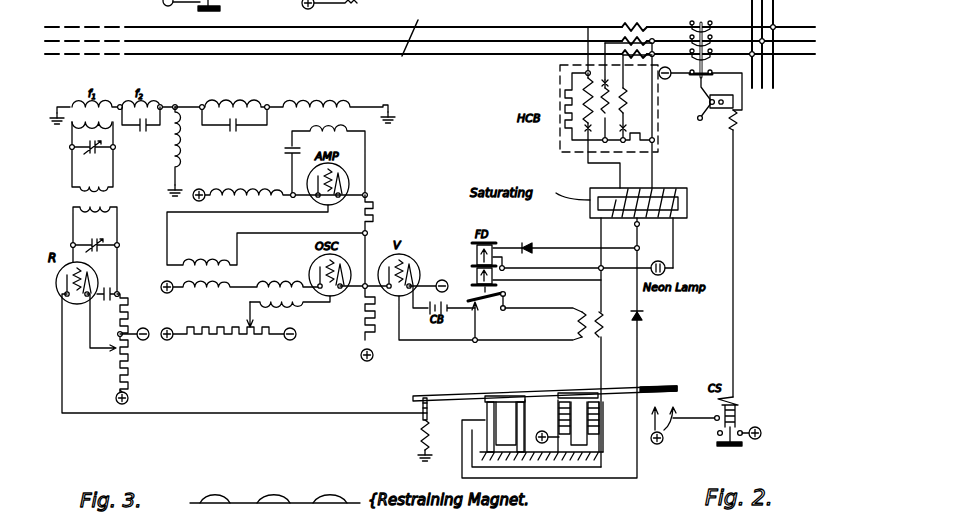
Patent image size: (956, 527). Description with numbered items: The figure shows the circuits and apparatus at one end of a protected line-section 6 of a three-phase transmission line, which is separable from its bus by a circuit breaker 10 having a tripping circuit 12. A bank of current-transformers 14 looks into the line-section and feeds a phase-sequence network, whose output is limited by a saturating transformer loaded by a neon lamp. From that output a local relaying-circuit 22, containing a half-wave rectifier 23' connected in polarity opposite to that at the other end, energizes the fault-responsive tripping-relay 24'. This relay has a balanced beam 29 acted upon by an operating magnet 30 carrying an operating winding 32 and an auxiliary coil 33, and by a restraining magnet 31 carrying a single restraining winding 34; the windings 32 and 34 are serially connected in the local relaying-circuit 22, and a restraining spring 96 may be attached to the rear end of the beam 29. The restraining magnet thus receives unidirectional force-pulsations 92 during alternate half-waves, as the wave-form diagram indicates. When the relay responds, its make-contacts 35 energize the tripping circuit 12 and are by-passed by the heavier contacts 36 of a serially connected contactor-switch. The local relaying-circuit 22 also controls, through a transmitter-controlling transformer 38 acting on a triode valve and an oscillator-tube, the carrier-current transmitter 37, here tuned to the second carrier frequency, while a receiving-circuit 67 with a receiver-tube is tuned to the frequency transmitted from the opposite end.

In FIG. 2, the protected line-section 6 is at (410, 32).
In FIG. 2, the current-transformers 14 is at (640, 14).
In FIG. 2, the circuit breaker 10 is at (712, 15).
In FIG. 2, the tripping circuit 12 is at (733, 160).
In FIG. 2, the carrier-current receiving-circuit 67 is at (150, 165).
In FIG. 2, the carrier-current transmitter 37 is at (234, 165).
In FIG. 2, the transmitter-controlling transformer 38 is at (588, 340).
In FIG. 2, the local relaying-circuit 22 is at (637, 356).
In FIG. 2, the half-wave rectifier 23' is at (655, 320).
In FIG. 2, the balanced beam 29 is at (470, 396).
In FIG. 2, the tripping-relay 24' is at (615, 404).
In FIG. 2, the restraining spring 96 is at (420, 434).
In FIG. 2, the auxiliary coil 33 is at (559, 425).
In FIG. 2, the operating winding 32 is at (600, 422).
In FIG. 2, the restraining winding 34 is at (485, 428).
In FIG. 2, the restraining magnet 31 is at (481, 445).
In FIG. 2, the operating magnet 30 is at (600, 446).
In FIG. 2, the make-contacts 35 is at (671, 427).
In FIG. 2, the heavier contacts 36 is at (742, 439).
In FIG. 3, the force-pulsations 92 is at (264, 499).